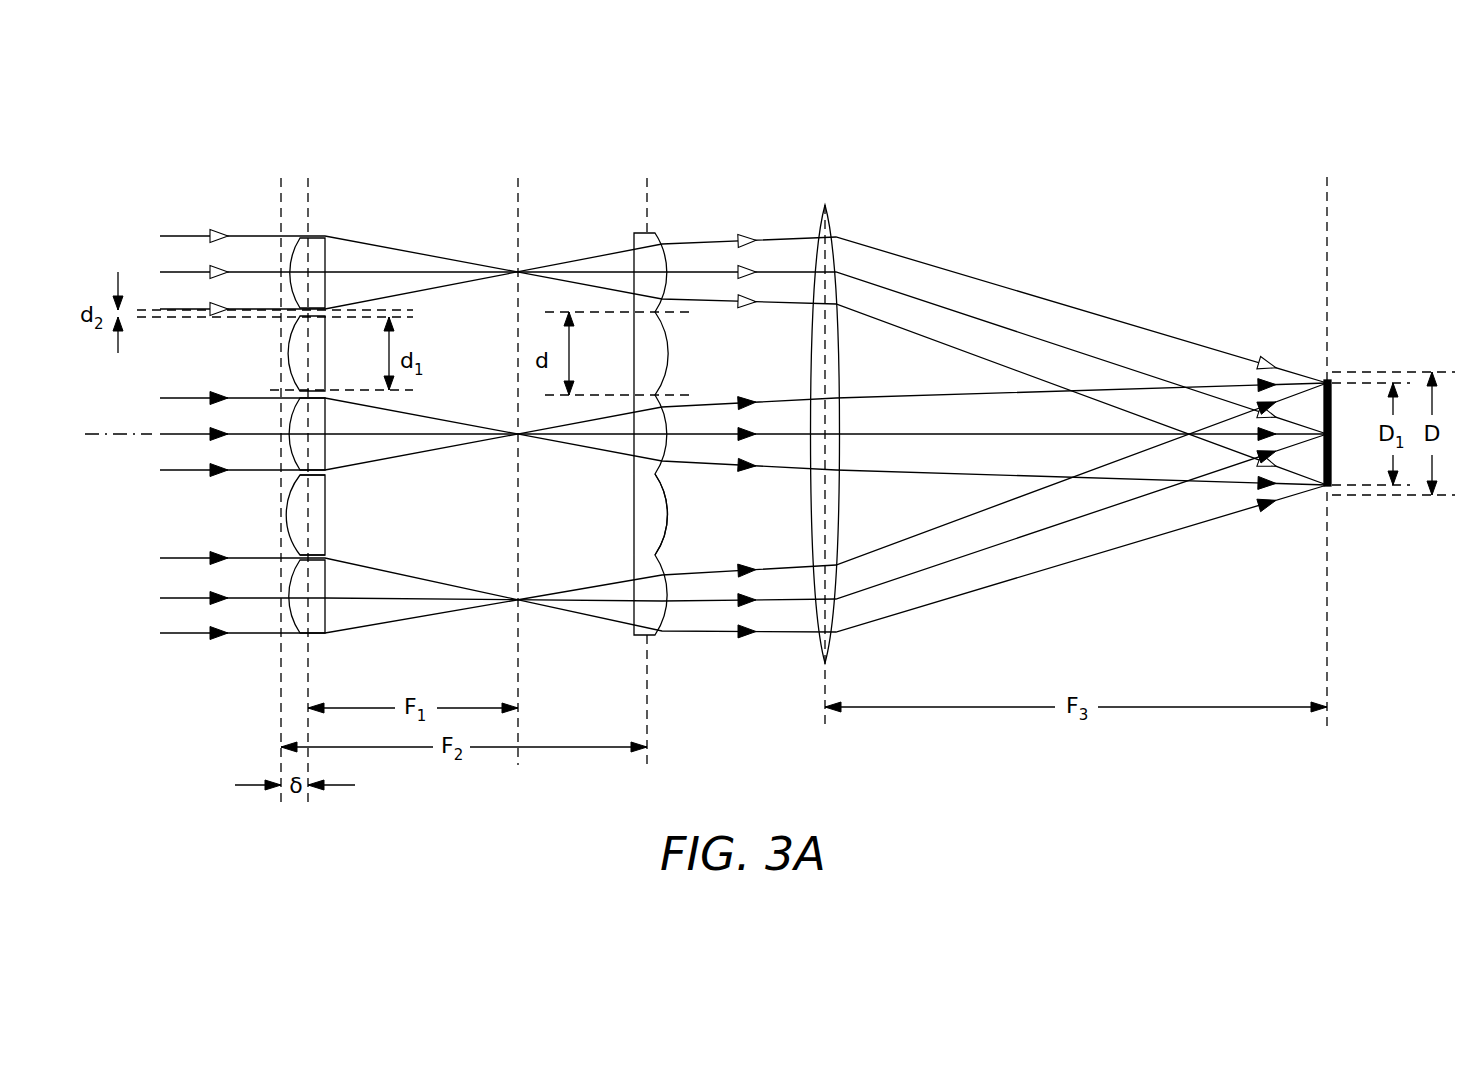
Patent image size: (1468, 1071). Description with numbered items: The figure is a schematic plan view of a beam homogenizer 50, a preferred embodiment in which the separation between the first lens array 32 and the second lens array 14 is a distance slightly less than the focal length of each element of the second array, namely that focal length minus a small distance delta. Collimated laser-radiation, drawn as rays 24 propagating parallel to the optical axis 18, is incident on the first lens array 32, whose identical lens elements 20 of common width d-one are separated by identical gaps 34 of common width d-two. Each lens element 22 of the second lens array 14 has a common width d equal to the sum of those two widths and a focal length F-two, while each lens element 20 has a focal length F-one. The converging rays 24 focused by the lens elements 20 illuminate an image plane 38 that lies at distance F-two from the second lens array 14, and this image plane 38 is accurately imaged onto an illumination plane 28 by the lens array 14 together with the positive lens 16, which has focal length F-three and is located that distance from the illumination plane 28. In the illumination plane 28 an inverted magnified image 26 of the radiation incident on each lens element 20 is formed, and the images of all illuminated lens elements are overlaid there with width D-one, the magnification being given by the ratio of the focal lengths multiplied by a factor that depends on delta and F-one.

The second lens array 14 is at (638, 232).
The positive lens 16 is at (824, 205).
The optical axis 18 is at (112, 436).
The lens element 20 is at (298, 368).
The lens element 22 is at (656, 545).
The rays 24 is at (388, 267).
The inverted magnified image 26 is at (1330, 380).
The illumination plane 28 is at (1320, 277).
The first lens array 32 is at (322, 228).
The gap 34 is at (325, 475).
The image plane 38 is at (280, 200).
The beam homogenizer 50 is at (1168, 152).